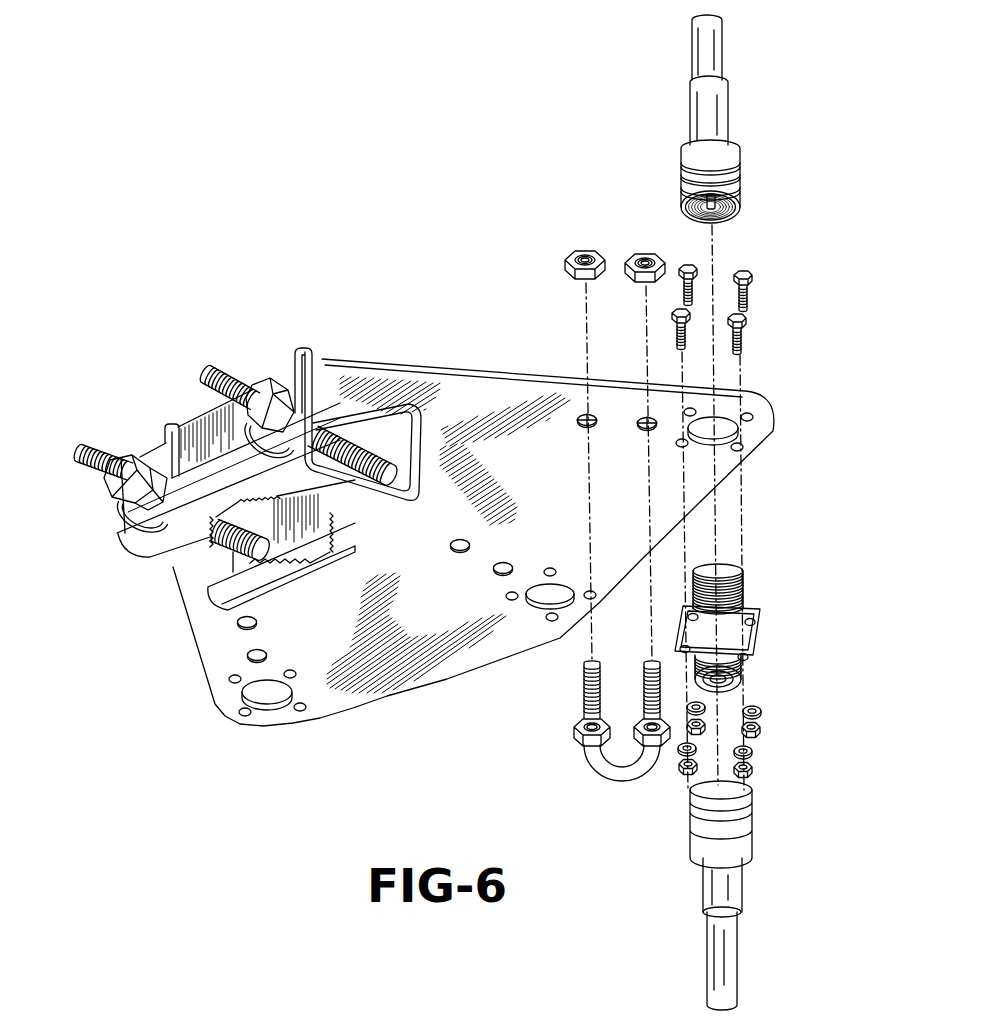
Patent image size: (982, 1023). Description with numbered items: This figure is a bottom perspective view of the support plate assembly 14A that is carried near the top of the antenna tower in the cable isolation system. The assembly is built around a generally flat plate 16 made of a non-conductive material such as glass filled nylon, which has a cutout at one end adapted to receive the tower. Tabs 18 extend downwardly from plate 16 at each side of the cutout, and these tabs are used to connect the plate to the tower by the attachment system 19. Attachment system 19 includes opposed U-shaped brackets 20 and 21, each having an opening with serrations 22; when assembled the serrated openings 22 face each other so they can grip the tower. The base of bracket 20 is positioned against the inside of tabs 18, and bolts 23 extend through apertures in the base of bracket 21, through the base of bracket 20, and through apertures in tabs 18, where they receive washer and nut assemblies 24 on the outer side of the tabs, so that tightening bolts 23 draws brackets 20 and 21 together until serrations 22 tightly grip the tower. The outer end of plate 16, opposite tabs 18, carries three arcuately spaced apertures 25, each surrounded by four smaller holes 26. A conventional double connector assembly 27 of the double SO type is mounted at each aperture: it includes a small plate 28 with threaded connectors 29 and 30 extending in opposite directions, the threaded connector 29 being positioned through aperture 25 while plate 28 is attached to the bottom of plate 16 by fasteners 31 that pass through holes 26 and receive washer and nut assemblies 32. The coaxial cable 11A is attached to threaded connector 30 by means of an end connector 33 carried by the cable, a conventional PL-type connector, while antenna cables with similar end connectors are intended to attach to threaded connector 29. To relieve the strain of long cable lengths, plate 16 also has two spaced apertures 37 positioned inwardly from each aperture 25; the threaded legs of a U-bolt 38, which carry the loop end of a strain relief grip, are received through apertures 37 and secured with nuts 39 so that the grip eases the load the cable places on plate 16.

The coaxial cable 11A is at (738, 965).
The support plate assembly 14A is at (477, 246).
The plate 16 is at (430, 673).
The tabs 18 is at (154, 448).
The attachment system 19 is at (116, 556).
The U-shaped bracket 20 is at (205, 452).
The U-shaped bracket 21 is at (418, 455).
The serrations 22 is at (305, 548).
The bolts 23 is at (80, 452).
The washer and nut assemblies 24 is at (133, 495).
The apertures 25 is at (262, 690).
The holes 26 is at (243, 712).
The double connector assembly 27 is at (762, 617).
The small plate 28 is at (757, 632).
The threaded connector 29 is at (725, 575).
The threaded connector 30 is at (742, 666).
The fasteners 31 is at (742, 274).
The washer and nut assemblies 32 is at (752, 768).
The end connectors 33 is at (735, 160).
The apertures 37 is at (250, 655).
The U-bolt 38 is at (608, 760).
The nuts 39 is at (632, 256).